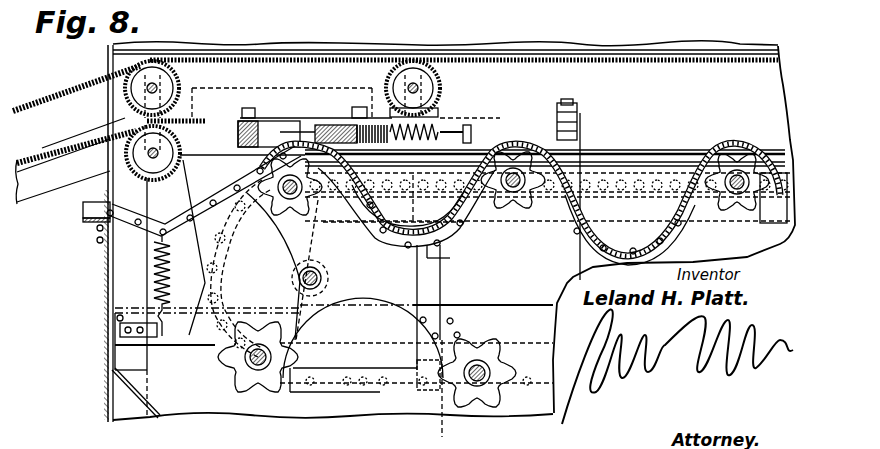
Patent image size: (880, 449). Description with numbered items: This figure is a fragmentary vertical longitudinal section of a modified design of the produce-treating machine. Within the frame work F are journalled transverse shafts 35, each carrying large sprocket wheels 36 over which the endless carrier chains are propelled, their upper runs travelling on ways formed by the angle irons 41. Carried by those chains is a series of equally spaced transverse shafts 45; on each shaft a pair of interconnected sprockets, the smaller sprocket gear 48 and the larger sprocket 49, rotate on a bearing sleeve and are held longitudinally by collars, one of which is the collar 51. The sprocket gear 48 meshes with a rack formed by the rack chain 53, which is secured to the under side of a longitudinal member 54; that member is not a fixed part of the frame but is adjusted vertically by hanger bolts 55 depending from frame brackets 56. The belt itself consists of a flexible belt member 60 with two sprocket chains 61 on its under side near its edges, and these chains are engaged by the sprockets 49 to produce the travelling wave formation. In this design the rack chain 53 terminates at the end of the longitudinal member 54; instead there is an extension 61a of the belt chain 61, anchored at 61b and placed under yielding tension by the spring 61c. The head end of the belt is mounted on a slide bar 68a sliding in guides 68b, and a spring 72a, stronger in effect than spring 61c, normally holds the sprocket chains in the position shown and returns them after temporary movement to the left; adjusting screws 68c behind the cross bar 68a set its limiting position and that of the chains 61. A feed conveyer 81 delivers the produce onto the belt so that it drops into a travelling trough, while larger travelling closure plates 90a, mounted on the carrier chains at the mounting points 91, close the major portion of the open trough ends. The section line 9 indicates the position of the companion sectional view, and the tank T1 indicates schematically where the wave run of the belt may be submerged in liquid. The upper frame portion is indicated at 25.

The table frame 25 is at (355, 44).
The feed conveyer 81 is at (66, 87).
The spring 72a is at (440, 113).
The slide bar 68a is at (283, 125).
The guides 68b is at (272, 112).
The adjusting screws 68c is at (382, 118).
The hanger bolts 55 is at (556, 136).
The frame brackets 56 is at (582, 113).
The longitudinal member 54 is at (593, 148).
The rack chain 53 is at (622, 148).
The belt member 60 is at (743, 141).
The angle irons 41 is at (480, 213).
The travelling closure plates 90a is at (372, 240).
The sprocket 49 is at (298, 232).
The collar 51 is at (516, 230).
The shafts 45 is at (520, 217).
The sprocket gear 48 is at (278, 229).
The sprocket chains 61 is at (444, 307).
The extension 61a is at (247, 167).
The anchor 61b is at (92, 218).
The spring 61c is at (153, 283).
The sprocket wheels 36 is at (400, 290).
The transverse shafts 35 is at (323, 278).
The mounting points 91 is at (201, 268).
The section line 9 is at (196, 97).
The frame work F is at (100, 409).
The tank T1 is at (558, 18).